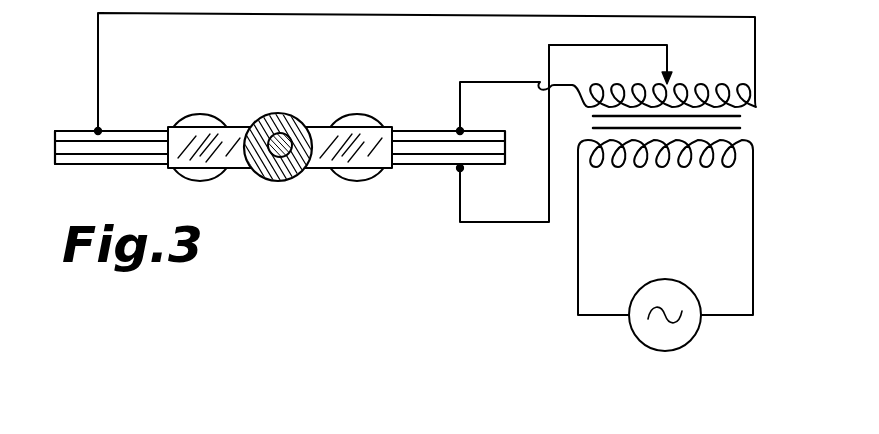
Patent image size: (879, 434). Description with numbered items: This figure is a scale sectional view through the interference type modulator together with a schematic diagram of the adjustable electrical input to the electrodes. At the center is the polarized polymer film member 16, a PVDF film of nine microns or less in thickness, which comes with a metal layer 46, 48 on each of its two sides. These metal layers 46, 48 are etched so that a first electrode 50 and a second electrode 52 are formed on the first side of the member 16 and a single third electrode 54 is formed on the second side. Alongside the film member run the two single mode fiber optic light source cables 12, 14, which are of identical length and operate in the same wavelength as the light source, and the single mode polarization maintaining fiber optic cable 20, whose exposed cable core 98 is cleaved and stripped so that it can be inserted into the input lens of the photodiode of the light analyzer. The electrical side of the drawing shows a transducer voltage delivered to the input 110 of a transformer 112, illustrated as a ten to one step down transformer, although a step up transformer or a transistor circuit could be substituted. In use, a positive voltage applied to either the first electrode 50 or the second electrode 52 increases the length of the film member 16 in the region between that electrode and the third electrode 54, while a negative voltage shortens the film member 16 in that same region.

The single mode fiber optic light source cable 12 is at (358, 114).
The single mode fiber optic light source cable 14 is at (199, 114).
The polarized polymer film member 16 is at (52, 182).
The single mode polarization maintaining fiber optic cable 20 is at (272, 180).
The metal layer 46 is at (62, 130).
The metal layer 48 is at (80, 165).
The first electrode 50 is at (421, 124).
The second electrode 52 is at (132, 124).
The third electrode 54 is at (142, 175).
The cable core 98 is at (287, 160).
The transformer input 110 is at (642, 289).
The transformer 112 is at (556, 236).